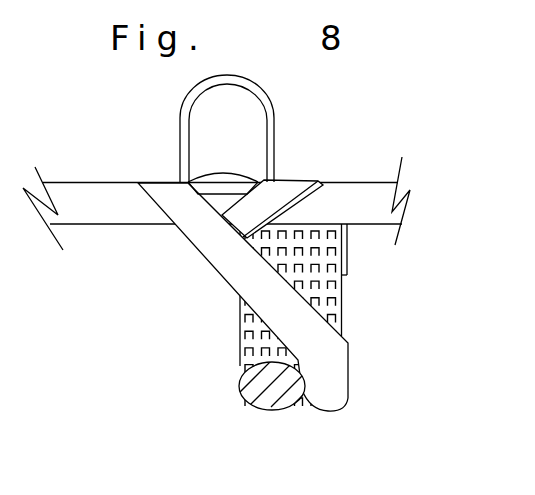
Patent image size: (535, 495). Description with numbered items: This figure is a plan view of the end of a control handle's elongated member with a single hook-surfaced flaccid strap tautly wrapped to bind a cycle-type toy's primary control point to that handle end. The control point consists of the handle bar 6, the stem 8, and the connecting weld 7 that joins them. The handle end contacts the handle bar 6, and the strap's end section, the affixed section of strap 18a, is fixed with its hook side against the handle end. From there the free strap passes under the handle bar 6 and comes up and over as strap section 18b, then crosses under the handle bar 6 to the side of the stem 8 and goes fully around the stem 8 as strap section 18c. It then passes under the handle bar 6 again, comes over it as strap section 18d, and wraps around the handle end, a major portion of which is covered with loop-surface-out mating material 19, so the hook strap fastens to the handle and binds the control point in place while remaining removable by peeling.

The handle bar 6 is at (80, 207).
The connecting weld 7 is at (223, 185).
The stem 8 is at (250, 115).
The affixed section of strap 18a is at (407, 268).
The strap section 18b is at (350, 160).
The strap section 18c is at (347, 125).
The strap section 18d is at (216, 240).
The loop-surface-out mating material 19 is at (268, 276).